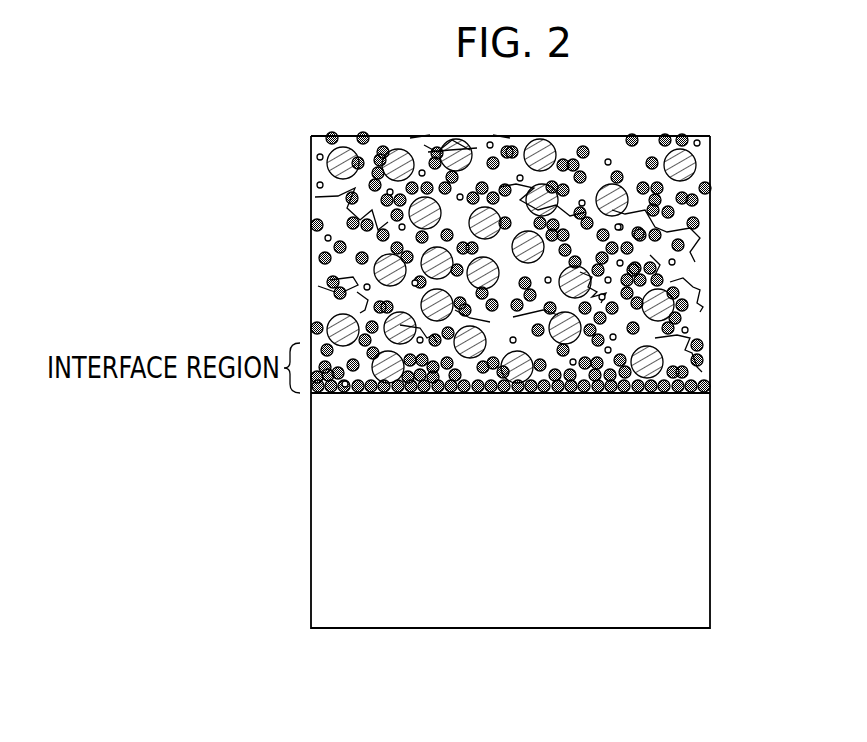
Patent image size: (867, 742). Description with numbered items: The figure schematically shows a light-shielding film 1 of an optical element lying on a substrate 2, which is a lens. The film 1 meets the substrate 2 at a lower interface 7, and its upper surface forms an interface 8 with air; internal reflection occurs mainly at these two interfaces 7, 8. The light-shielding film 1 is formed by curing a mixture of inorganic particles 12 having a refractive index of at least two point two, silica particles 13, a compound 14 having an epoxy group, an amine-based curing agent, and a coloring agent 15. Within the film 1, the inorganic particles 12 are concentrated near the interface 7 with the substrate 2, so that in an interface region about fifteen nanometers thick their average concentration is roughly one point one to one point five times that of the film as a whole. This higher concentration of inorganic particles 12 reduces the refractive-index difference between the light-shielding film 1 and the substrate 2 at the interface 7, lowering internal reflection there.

The light-shielding film 1 is at (322, 275).
The substrate 2 is at (322, 505).
The interface 7 is at (320, 393).
The interface 8 is at (322, 135).
The inorganic particles 12 is at (705, 378).
The silica particles 13 is at (698, 159).
The compound having an epoxy group 14 is at (705, 297).
The coloring agent 15 is at (689, 332).